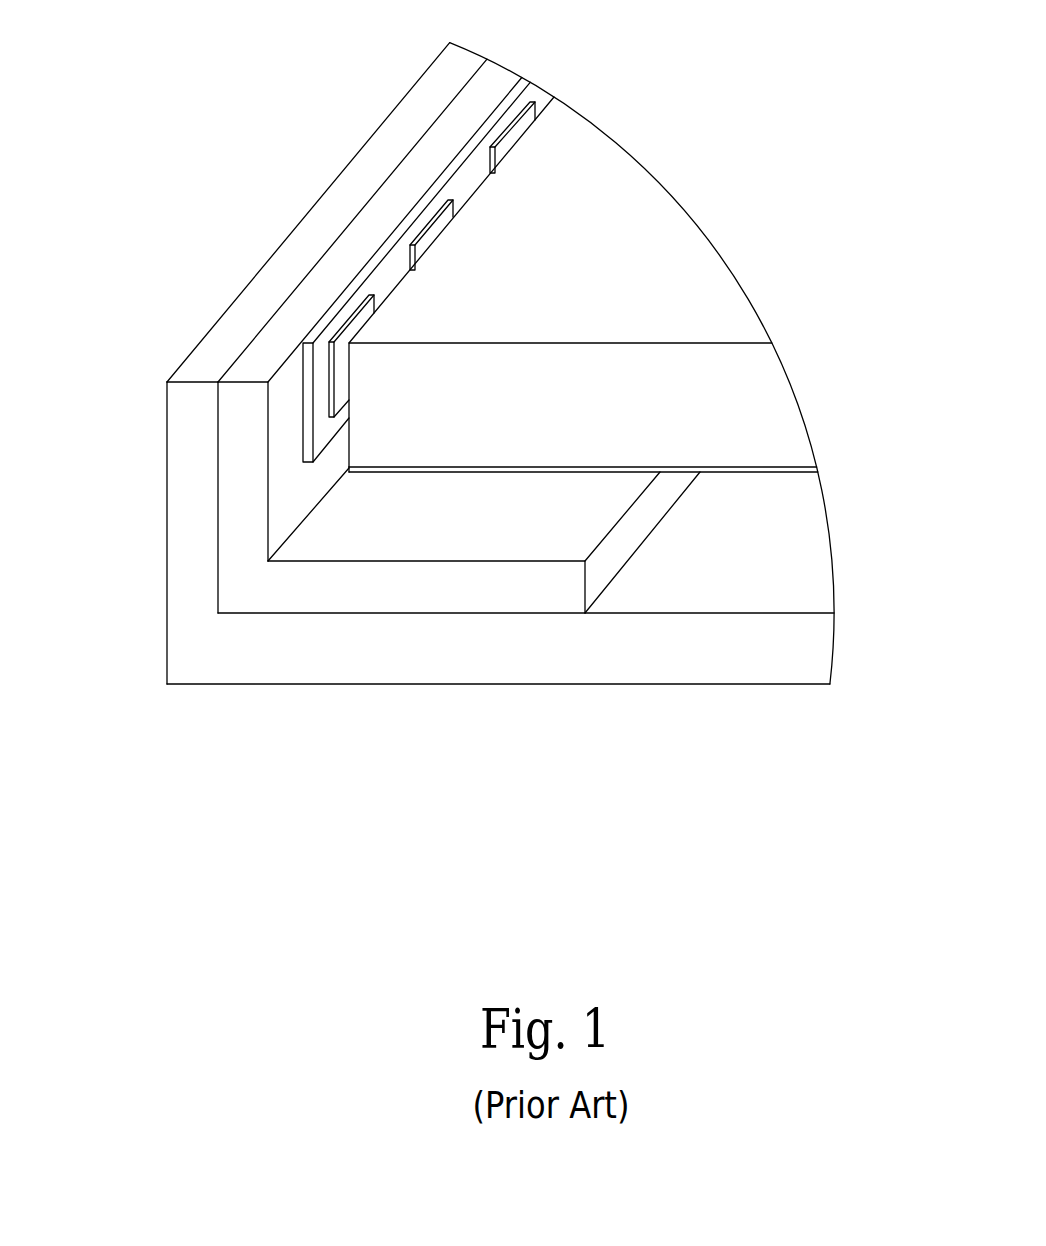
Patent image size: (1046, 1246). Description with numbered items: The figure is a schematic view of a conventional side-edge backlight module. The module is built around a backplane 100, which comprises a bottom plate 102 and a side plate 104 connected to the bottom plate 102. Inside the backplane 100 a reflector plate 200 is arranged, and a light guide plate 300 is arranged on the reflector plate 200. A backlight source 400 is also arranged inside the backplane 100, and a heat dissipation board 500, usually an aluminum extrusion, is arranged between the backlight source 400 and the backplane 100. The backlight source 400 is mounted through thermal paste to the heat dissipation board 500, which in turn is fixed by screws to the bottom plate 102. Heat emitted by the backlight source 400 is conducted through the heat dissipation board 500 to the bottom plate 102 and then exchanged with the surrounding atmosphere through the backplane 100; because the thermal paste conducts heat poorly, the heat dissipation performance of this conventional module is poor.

The backplane 100 is at (545, 658).
The bottom plate 102 is at (389, 657).
The side plate 104 is at (182, 523).
The reflector plate 200 is at (717, 470).
The light guide plate 300 is at (630, 280).
The backlight source 400 is at (320, 388).
The heat dissipation board 500 is at (258, 580).